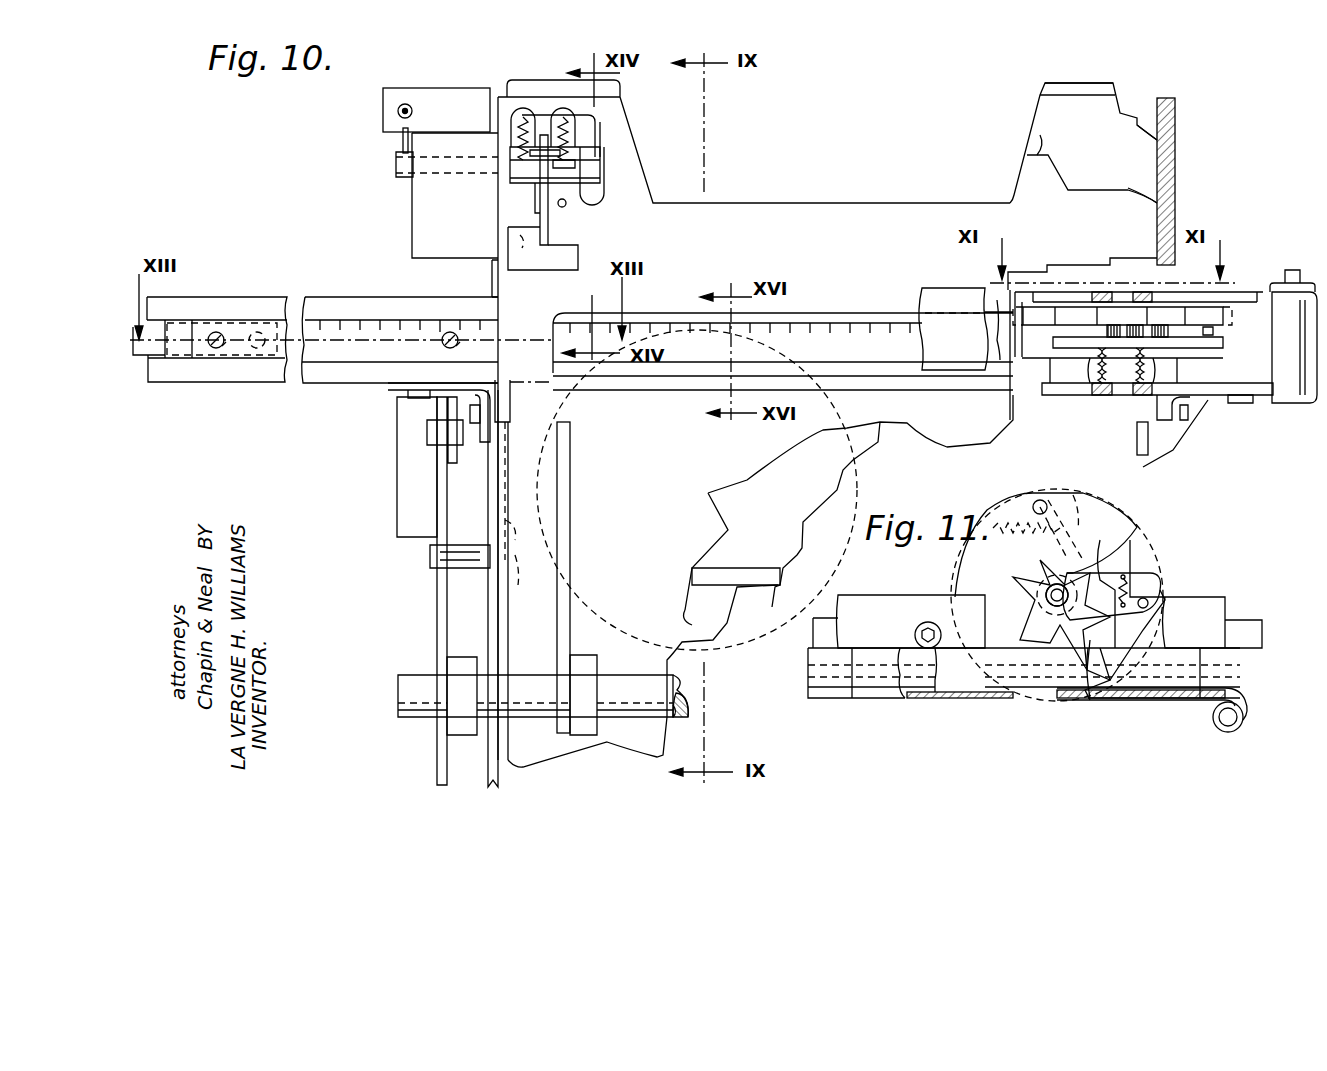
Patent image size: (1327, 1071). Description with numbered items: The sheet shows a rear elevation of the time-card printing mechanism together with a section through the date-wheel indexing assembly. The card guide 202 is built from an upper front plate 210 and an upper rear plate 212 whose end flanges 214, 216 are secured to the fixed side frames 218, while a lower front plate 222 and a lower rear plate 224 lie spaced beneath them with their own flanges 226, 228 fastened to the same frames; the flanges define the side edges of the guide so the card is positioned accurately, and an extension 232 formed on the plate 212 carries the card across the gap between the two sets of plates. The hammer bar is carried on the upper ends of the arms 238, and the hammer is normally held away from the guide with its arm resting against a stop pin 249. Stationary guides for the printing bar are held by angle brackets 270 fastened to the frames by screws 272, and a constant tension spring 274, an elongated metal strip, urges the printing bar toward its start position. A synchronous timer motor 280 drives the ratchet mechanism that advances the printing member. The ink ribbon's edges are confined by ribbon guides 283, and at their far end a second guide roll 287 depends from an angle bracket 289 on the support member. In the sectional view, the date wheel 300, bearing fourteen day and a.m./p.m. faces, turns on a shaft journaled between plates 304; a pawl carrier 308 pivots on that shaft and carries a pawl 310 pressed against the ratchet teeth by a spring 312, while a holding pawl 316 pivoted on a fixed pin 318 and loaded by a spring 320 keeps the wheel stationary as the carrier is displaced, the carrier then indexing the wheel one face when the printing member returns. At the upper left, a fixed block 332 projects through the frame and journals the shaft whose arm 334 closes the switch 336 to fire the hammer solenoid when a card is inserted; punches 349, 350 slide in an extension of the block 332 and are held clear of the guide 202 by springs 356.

In FIG. 10, the guide 202 is at (983, 60).
In FIG. 10, the upper front plate 210 is at (1036, 96).
In FIG. 10, the upper rear plate 212 is at (1037, 130).
In FIG. 10, the end flange 214 is at (1152, 102).
In FIG. 10, the end flange 216 is at (1157, 167).
In FIG. 10, the fixed side frame 218 is at (490, 97).
In FIG. 10, the lower front plate 222 is at (797, 548).
In FIG. 10, the lower rear plate 224 is at (747, 480).
In FIG. 10, the flange 226 is at (530, 541).
In FIG. 10, the flange 228 is at (534, 580).
In FIG. 10, the extension 232 is at (553, 373).
In FIG. 10, the arm 238 is at (572, 480).
In FIG. 10, the stop pin 249 is at (430, 558).
In FIG. 10, the angle bracket 270 is at (405, 393).
In FIG. 10, the screw 272 is at (472, 425).
In FIG. 10, the constant tension spring 274 is at (148, 360).
In FIG. 10, the synchronous timer motor 280 is at (720, 640).
In FIG. 11, the ribbon guide 283 is at (990, 700).
In FIG. 11, the second guide roll 287 is at (1212, 722).
In FIG. 10, the angle bracket 289 is at (1305, 292).
In FIG. 10, the date wheel 300 is at (1050, 325).
In FIG. 11, the date wheel 300 is at (1135, 527).
In FIG. 10, the plate 304 is at (1285, 265).
In FIG. 11, the plate 304 is at (908, 595).
In FIG. 10, the pawl carrier 308 is at (1183, 348).
In FIG. 11, the pawl carrier 308 is at (1160, 600).
In FIG. 10, the pawl 310 is at (1197, 325).
In FIG. 11, the pawl 310 is at (1125, 655).
In FIG. 11, the spring 312 is at (1143, 577).
In FIG. 11, the holding pawl 316 is at (1073, 495).
In FIG. 11, the fixed pin 318 is at (1058, 480).
In FIG. 11, the spring 320 is at (1010, 510).
In FIG. 10, the fixed block 332 is at (412, 230).
In FIG. 10, the arm 334 is at (402, 145).
In FIG. 10, the switch 336 is at (447, 88).
In FIG. 10, the punch 349 is at (543, 248).
In FIG. 10, the punch 350 is at (565, 206).
In FIG. 10, the spring 356 is at (222, 355).